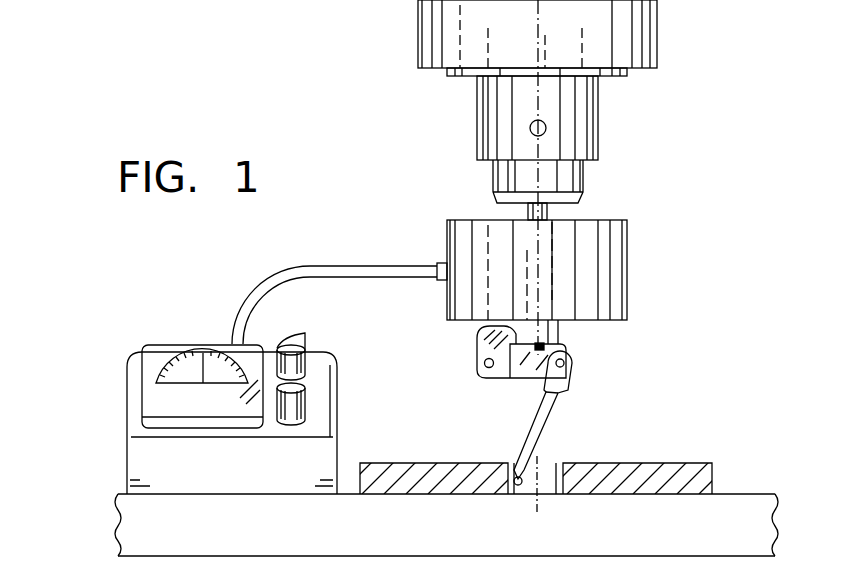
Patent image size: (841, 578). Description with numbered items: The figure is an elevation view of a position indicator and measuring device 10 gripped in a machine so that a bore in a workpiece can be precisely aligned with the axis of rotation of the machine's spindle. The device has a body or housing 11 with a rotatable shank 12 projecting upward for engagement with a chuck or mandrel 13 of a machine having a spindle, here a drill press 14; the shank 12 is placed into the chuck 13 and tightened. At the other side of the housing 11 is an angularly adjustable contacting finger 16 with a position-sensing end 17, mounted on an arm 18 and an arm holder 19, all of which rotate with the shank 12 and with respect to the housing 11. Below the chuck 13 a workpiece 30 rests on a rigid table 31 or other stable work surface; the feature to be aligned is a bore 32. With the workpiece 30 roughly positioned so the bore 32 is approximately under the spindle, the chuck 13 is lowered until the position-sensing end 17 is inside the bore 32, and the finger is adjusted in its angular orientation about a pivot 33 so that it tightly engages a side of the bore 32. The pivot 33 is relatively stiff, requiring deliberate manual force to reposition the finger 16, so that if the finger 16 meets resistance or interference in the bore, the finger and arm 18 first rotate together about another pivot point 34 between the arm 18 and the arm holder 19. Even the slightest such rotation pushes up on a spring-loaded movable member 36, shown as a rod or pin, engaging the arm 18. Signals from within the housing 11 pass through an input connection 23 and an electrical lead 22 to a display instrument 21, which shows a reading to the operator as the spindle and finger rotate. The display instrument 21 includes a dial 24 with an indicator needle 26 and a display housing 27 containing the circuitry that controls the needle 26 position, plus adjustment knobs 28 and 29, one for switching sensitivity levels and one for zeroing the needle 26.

The position indicator and measuring device 10 is at (393, 158).
The body or housing 11 is at (617, 277).
The rotatable shank 12 is at (527, 212).
The chuck or mandrel 13 is at (563, 175).
The drill press 14 is at (637, 30).
The contacting finger 16 is at (565, 388).
The position-sensing end 17 is at (516, 468).
The arm 18 is at (527, 378).
The arm holder 19 is at (483, 352).
The display instrument 21 is at (205, 383).
The electrical lead 22 is at (295, 272).
The input connection 23 is at (440, 260).
The dial 24 is at (155, 373).
The indicator needle 26 is at (196, 373).
The display housing 27 is at (323, 380).
The adjustment knob 28 is at (298, 342).
The adjustment knob 29 is at (293, 408).
The workpiece 30 is at (668, 463).
The rigid table 31 is at (743, 494).
The bore 32 is at (548, 463).
The pivot 33 is at (566, 362).
The pivot point 34 is at (484, 368).
The spring-loaded movable member 36 is at (545, 346).